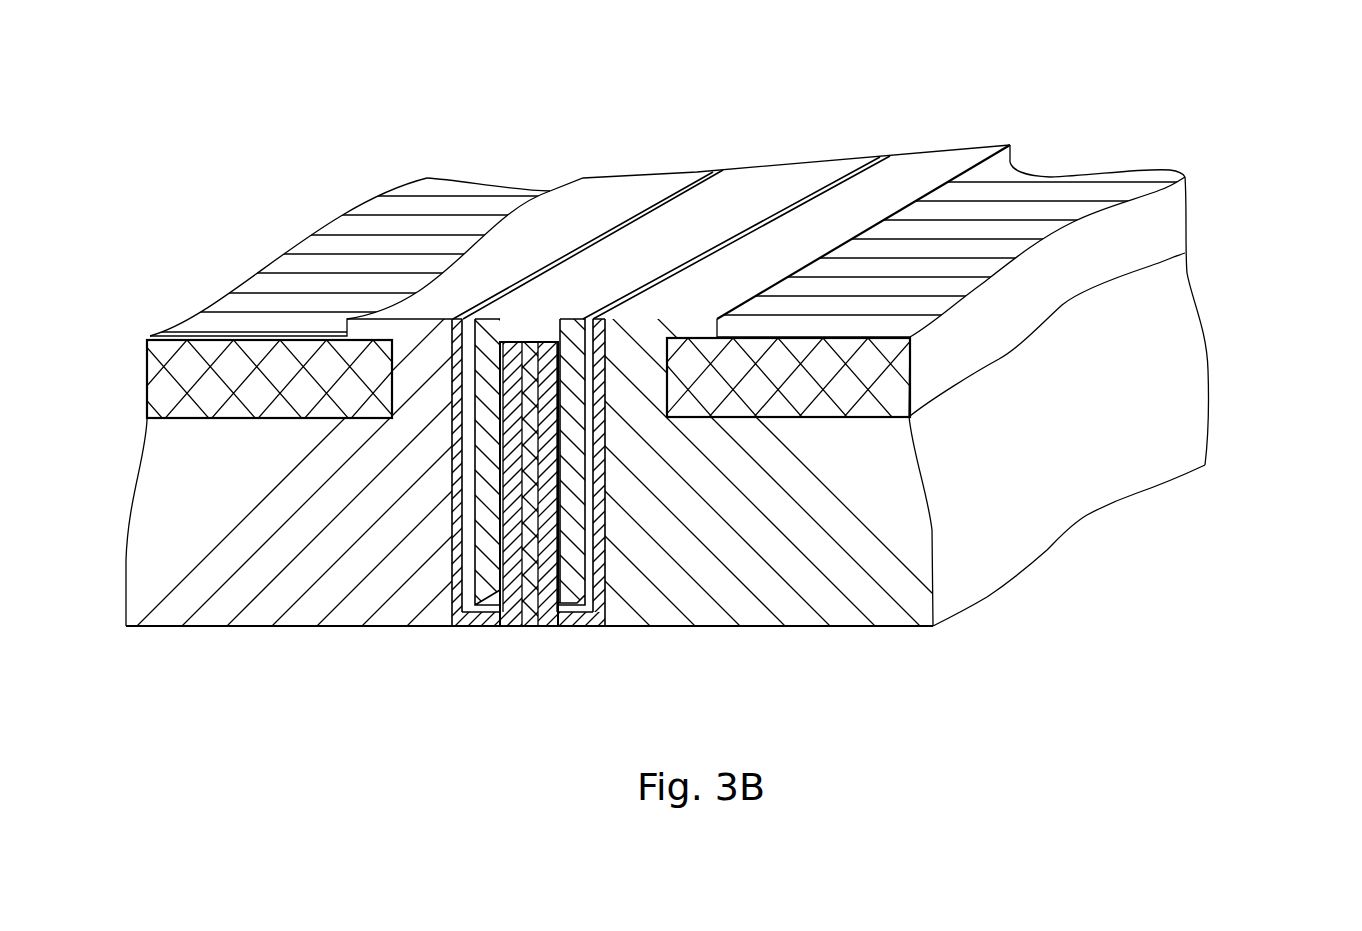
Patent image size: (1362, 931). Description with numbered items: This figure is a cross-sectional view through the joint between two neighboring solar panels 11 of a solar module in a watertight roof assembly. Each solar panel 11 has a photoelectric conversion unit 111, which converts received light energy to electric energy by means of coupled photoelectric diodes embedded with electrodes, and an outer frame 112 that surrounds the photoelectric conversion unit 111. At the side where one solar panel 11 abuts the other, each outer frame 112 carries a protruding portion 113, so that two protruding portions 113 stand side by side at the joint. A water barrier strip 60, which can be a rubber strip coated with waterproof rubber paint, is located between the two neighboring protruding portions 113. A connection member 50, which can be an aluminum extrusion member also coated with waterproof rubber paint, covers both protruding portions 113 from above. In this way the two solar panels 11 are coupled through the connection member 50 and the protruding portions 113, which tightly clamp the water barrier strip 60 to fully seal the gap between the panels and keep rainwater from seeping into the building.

The solar panel 11 is at (345, 183).
The photoelectric conversion unit 111 is at (435, 215).
The outer frame 112 is at (310, 617).
The protruding portion 113 is at (483, 617).
The connection member 50 is at (760, 190).
The water barrier strip 60 is at (527, 630).